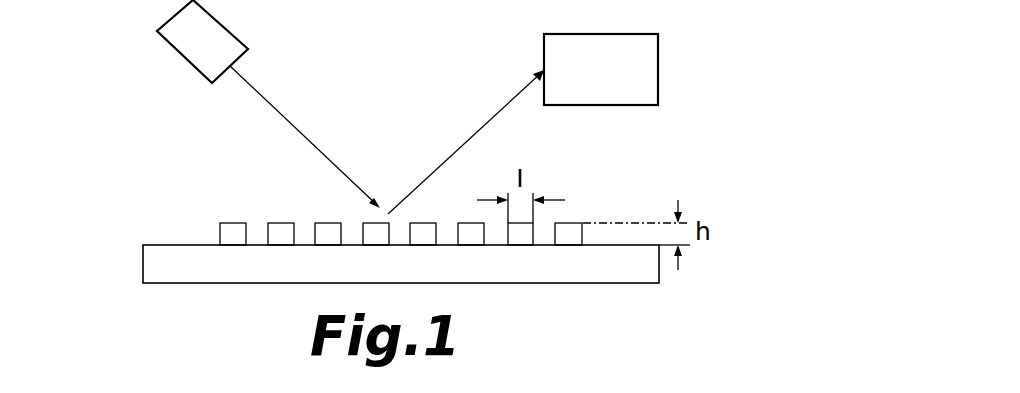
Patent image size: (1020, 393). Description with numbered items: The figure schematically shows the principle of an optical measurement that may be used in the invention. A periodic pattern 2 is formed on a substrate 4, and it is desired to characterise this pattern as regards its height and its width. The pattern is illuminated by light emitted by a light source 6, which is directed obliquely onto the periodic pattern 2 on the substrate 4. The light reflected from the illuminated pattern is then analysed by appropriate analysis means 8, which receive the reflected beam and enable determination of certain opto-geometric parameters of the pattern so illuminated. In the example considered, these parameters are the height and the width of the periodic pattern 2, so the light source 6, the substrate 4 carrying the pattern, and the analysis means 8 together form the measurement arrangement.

The periodic pattern 2 is at (230, 219).
The substrate 4 is at (148, 265).
The light source 6 is at (188, 58).
The analysis means 8 is at (652, 73).